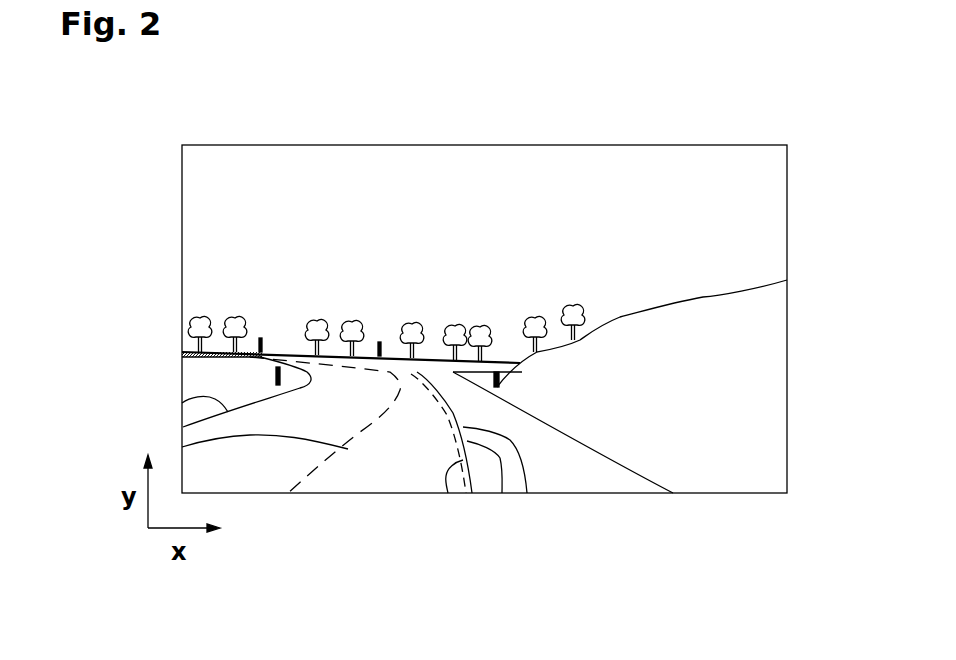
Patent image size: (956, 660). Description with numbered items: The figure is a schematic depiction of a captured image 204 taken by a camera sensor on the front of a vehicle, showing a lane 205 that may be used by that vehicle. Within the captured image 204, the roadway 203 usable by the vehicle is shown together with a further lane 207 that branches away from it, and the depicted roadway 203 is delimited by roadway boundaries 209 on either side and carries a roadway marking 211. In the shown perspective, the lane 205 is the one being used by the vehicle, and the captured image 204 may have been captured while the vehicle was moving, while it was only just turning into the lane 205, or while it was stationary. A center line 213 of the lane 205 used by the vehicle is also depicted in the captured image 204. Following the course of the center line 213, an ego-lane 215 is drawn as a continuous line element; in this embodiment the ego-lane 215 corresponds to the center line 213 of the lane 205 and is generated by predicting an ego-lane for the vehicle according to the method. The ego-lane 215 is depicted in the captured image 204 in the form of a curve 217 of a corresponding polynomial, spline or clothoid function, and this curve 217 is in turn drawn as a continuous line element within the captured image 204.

The captured image 204 is at (752, 133).
The roadway 203 is at (393, 459).
The lane 205 is at (329, 480).
The further lane 207 is at (253, 462).
The roadway boundaries 209 is at (182, 403).
The roadway marking 211 is at (182, 447).
The center line 213 is at (448, 493).
The ego-lane 215 is at (502, 493).
The curve 217 is at (527, 493).